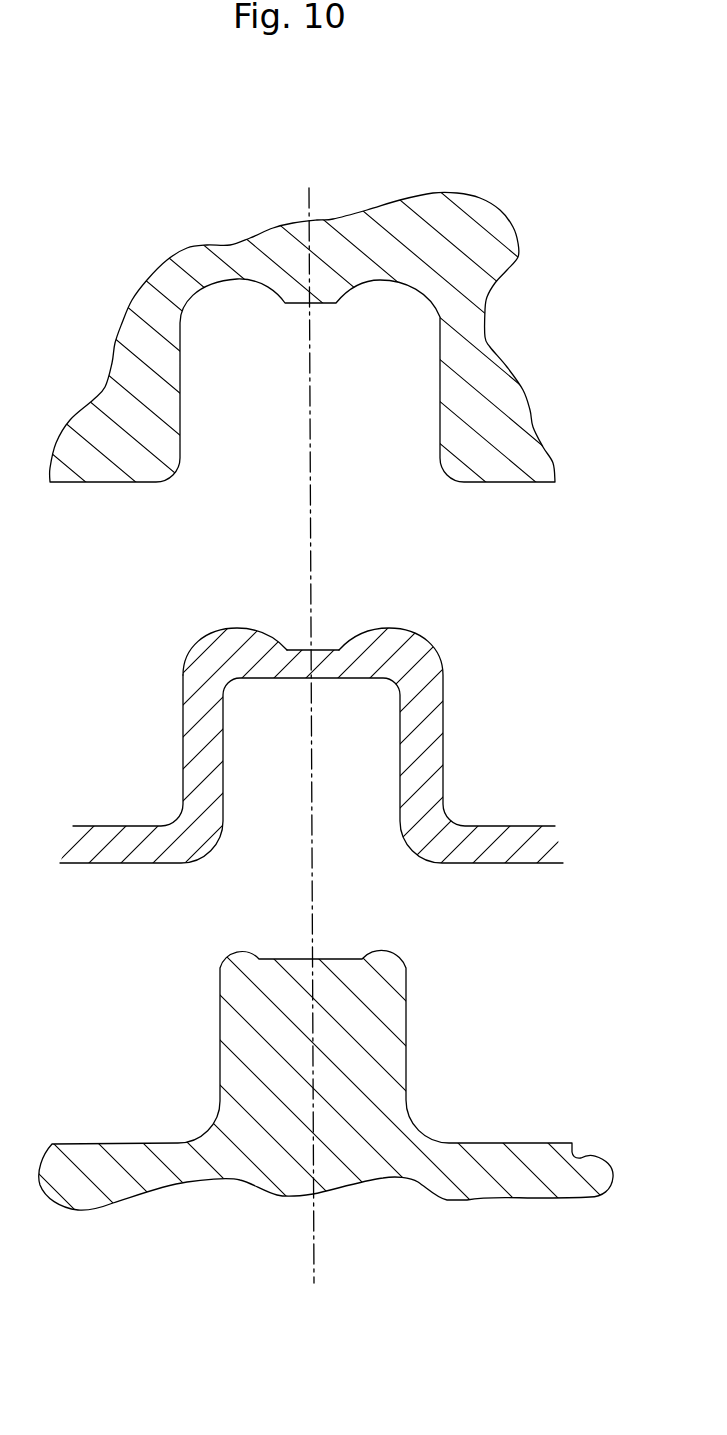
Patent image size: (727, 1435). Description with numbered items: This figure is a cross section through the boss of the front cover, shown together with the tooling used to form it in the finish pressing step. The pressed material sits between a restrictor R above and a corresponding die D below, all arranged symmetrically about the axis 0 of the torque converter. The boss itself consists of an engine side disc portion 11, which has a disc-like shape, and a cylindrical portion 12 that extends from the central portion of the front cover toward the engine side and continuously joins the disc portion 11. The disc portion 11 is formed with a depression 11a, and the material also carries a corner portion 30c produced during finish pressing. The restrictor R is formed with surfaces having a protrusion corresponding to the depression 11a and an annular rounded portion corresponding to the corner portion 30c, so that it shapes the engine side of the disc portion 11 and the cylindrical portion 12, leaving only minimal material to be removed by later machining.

The axis 0 is at (312, 739).
The restrictor R is at (515, 188).
The die D is at (522, 1217).
The cylindrical portion 12 is at (312, 799).
The engine side disc portion 11 is at (357, 680).
The depression 11a is at (330, 650).
The corner portion 30c is at (183, 643).